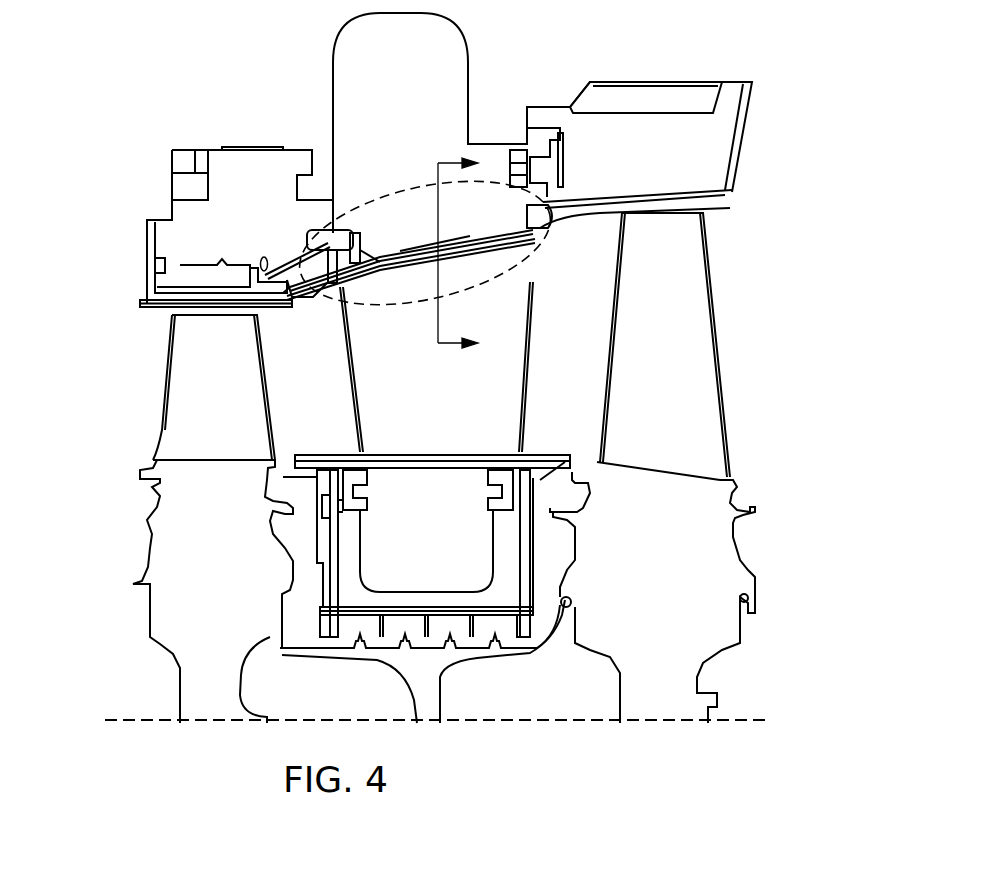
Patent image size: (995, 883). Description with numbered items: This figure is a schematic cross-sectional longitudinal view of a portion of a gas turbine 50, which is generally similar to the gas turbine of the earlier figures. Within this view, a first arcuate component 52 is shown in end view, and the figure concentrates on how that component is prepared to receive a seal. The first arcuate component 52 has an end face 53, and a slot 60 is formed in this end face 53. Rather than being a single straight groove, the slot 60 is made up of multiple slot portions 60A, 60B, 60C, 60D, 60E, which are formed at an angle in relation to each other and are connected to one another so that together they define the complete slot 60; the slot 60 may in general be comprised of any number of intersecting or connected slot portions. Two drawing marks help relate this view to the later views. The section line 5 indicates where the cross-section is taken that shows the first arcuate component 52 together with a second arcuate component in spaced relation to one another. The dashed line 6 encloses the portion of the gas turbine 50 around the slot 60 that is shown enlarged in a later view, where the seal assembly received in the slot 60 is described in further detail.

The gas turbine 50 is at (100, 195).
The first arcuate component 52 is at (580, 48).
The end face 53 is at (320, 288).
The section line 5- 5 is at (466, 249).
The dashed line 6 is at (400, 322).
The slot 60 is at (340, 232).
The slot portion 60A is at (328, 232).
The slot portion 60B is at (356, 264).
The slot portion 60C is at (458, 262).
The slot portion 60D is at (545, 233).
The slot portion 60E is at (540, 180).